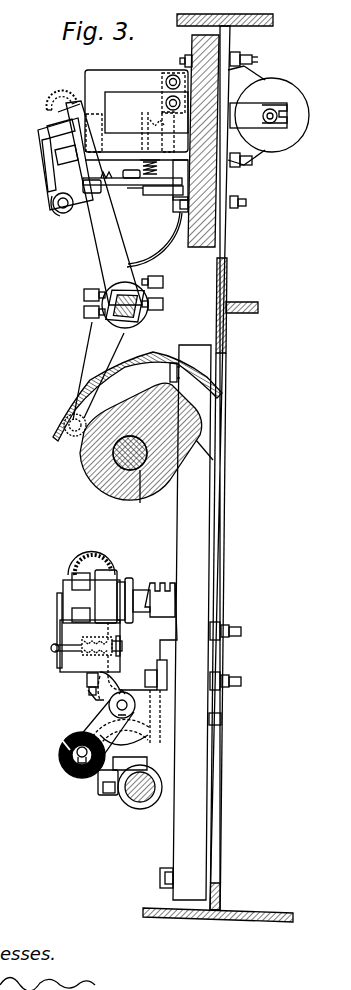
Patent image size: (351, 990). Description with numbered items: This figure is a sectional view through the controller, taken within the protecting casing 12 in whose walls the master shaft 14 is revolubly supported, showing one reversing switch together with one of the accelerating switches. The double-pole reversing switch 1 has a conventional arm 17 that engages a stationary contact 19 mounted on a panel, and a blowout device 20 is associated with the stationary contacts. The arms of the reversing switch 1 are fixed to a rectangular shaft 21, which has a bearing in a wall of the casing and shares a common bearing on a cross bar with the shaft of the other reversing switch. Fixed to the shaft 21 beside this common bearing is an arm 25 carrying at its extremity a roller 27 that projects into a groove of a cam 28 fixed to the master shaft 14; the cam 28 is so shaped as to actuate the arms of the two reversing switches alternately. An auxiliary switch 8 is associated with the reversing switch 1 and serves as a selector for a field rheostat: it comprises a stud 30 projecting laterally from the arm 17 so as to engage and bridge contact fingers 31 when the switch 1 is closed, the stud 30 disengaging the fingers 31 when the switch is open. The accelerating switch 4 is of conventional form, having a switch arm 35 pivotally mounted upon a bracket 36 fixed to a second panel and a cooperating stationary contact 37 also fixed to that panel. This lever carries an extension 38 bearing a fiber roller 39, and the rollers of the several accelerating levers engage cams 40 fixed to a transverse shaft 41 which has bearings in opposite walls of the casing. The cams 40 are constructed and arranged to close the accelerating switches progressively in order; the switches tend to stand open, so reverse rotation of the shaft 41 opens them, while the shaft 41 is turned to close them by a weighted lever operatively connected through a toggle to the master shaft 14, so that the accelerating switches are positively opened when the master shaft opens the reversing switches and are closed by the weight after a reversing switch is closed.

The double-pole reversing switch 1 is at (100, 246).
The accelerating switch 4 is at (70, 680).
The auxiliary switch 8 is at (163, 194).
The protecting casing 12 is at (234, 912).
The master shaft 14 is at (138, 500).
The arm of reversing switch 17 is at (96, 228).
The stationary contact 19 is at (145, 125).
The blowout device 20 is at (294, 103).
The rectangular shaft 21 is at (140, 318).
The arm 25 is at (88, 361).
The roller 27 is at (72, 437).
The cam 28 is at (106, 491).
The stud 30 is at (62, 221).
The contact fingers 31 is at (96, 188).
The switch arm 35 is at (110, 665).
The bracket 36 is at (150, 729).
The stationary contact 37 is at (132, 578).
The extension 38 is at (90, 726).
The fiber roller 39 is at (61, 758).
The cam 40 is at (112, 796).
The transverse shaft 41 is at (140, 806).